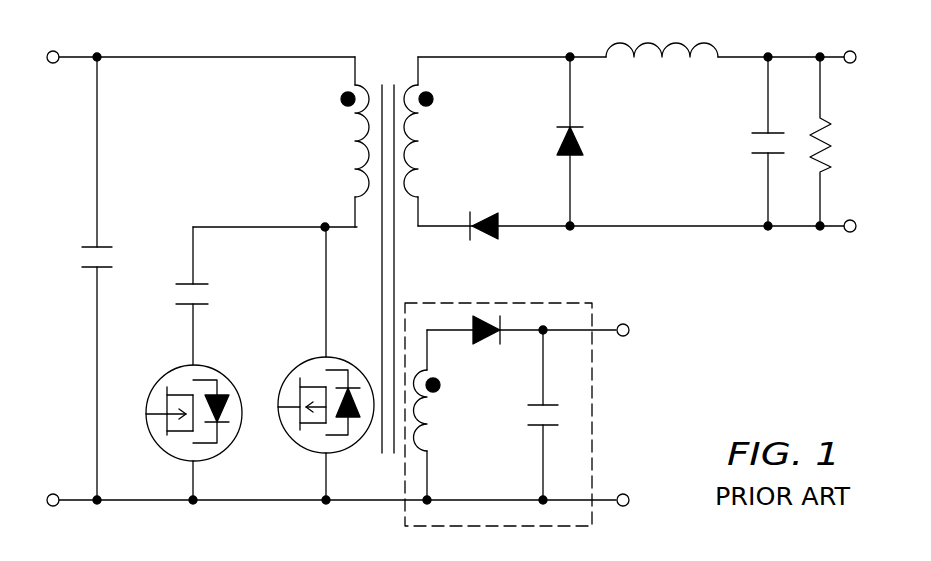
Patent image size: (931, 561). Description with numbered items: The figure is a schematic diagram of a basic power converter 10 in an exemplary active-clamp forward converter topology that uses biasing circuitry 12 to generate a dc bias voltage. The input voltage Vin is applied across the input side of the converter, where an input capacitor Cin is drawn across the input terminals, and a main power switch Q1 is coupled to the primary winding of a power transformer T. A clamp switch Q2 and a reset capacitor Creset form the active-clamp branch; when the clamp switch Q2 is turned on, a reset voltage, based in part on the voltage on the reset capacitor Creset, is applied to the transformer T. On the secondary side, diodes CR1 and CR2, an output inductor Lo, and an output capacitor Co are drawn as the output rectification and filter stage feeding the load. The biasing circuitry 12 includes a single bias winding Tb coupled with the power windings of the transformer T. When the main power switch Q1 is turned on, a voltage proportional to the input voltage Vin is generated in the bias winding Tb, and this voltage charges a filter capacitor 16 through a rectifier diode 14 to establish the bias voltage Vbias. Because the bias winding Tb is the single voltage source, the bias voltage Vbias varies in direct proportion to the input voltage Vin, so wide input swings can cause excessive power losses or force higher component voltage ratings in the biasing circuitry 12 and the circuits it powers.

The power converter 10 is at (310, 28).
The biasing circuitry 12 is at (535, 395).
The rectifier diode 14 is at (487, 320).
The filter capacitor 16 is at (537, 403).
The power transformer T is at (389, 56).
The bias winding Tb is at (417, 452).
The main power switch Q1 is at (300, 367).
The clamp switch Q2 is at (175, 368).
The input capacitor Cin is at (106, 243).
The reset capacitor Creset is at (198, 280).
The freewheeling diode CR1 is at (480, 212).
The rectifier diode CR2 is at (582, 145).
The output inductor Lo is at (650, 43).
The output capacitor Co is at (762, 130).
The input voltage Vin is at (52, 50).
The bias voltage Vbias is at (660, 332).